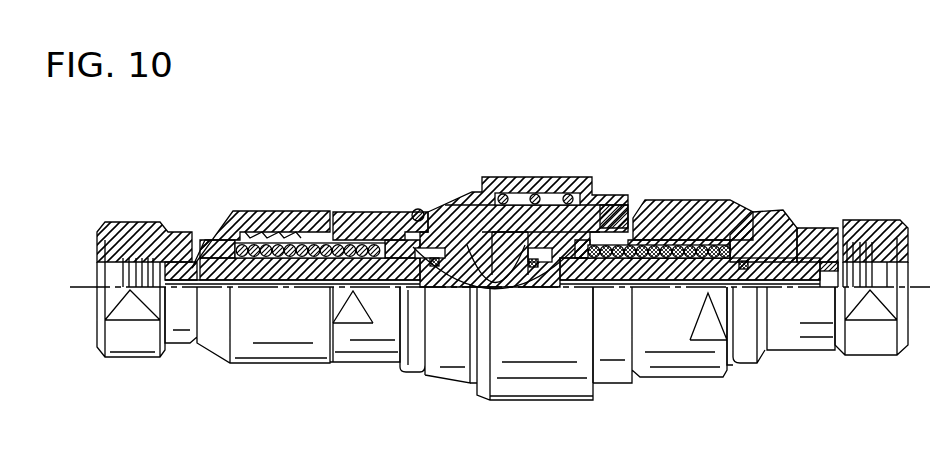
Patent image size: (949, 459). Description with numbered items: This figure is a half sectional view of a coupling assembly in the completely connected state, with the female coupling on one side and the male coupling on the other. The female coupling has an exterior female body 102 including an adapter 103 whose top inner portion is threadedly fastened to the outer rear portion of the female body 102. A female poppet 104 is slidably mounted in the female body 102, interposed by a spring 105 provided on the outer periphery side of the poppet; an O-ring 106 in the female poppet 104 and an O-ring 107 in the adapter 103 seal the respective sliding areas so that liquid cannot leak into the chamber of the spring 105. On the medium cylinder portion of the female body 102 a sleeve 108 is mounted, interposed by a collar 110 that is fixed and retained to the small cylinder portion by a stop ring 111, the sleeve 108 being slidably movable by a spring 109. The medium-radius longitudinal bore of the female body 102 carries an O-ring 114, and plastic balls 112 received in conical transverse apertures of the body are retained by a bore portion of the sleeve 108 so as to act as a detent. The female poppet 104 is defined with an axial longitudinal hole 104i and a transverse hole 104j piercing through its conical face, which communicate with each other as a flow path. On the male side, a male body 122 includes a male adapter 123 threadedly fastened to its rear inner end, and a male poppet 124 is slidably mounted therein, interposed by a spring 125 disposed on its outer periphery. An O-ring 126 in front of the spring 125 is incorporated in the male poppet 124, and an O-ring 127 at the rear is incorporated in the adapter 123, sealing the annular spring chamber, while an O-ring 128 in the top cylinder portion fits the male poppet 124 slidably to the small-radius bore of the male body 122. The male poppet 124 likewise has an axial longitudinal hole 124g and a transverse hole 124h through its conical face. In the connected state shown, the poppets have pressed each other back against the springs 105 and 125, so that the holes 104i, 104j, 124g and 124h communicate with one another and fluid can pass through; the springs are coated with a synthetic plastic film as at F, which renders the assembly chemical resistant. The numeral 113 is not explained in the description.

The female body 102 is at (350, 211).
The adapter 103 is at (274, 210).
The female poppet 104 is at (302, 282).
The longitudinal hole 104i is at (398, 272).
The transverse hole 104j is at (411, 270).
The spring 105 is at (285, 258).
The O-ring 106 is at (395, 216).
The O-ring 107 is at (200, 348).
The sleeve 108 is at (560, 176).
The spring 109 is at (513, 176).
The collar 110 is at (470, 193).
The stop ring 111 is at (419, 209).
The plastic balls 112 is at (612, 192).
The retainer ring 113 is at (470, 268).
The O-ring 114 is at (592, 194).
The male body 122 is at (699, 198).
The male adapter 123 is at (760, 208).
The male poppet 124 is at (680, 265).
The longitudinal hole 124g is at (738, 284).
The transverse hole 124h is at (572, 262).
The spring 125 is at (662, 256).
The O-ring 126 is at (586, 290).
The O-ring 127 is at (782, 228).
The O-ring 128 is at (532, 268).
The synthetic plastic film F is at (302, 212).